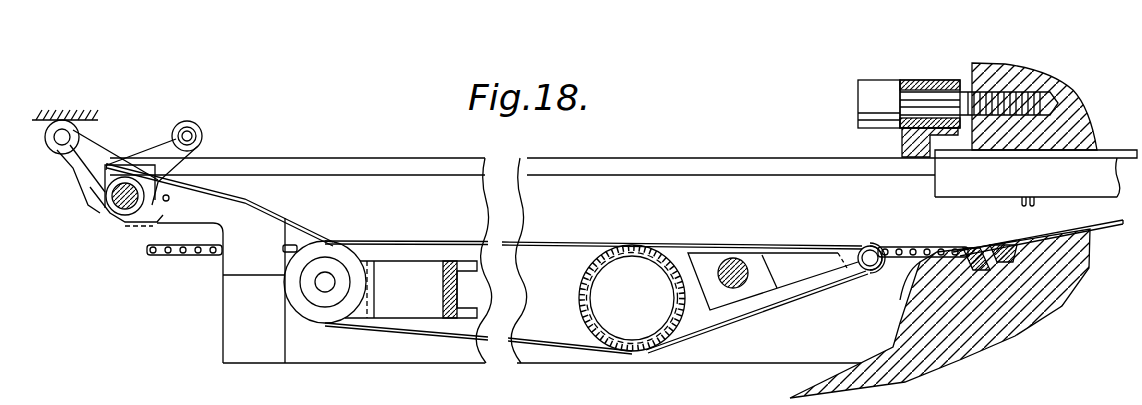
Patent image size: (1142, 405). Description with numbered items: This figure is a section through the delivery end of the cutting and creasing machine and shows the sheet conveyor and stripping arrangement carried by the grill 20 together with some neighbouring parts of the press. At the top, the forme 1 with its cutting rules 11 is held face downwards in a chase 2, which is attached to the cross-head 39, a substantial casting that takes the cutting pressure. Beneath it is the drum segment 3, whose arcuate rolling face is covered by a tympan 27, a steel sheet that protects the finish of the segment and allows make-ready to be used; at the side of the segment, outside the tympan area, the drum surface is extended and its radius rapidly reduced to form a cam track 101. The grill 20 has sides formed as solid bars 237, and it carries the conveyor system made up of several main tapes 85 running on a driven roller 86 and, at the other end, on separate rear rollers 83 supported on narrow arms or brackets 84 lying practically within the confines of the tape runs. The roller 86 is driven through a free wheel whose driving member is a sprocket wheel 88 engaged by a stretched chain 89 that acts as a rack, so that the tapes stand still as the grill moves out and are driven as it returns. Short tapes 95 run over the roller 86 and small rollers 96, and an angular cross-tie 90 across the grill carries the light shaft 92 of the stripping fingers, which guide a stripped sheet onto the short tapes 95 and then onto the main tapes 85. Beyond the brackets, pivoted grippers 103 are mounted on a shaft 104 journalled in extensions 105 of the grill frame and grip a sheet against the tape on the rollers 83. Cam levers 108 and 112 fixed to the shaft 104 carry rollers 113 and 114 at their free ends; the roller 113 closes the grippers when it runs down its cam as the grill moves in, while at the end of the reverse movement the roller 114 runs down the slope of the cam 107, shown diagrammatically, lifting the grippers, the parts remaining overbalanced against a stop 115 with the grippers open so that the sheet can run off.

The forme 1 is at (1105, 184).
The chase 2 is at (908, 138).
The drum segment 3 is at (1024, 314).
The cutting rules 11 is at (1023, 207).
The grill 20 is at (513, 312).
The tympan 27 is at (1113, 231).
The cross-head 39 is at (1078, 115).
The rollers 83 is at (306, 310).
The arms or brackets 84 is at (405, 302).
The tapes 85 is at (578, 348).
The roller 86 is at (651, 344).
The sprocket wheel 88 is at (669, 257).
The chain 89 is at (190, 256).
The angular cross-tie 90 is at (702, 316).
The shaft 92 is at (738, 288).
The short tapes 95 is at (814, 296).
The small rollers 96 is at (871, 252).
The cam track 101 is at (912, 303).
The grippers 103 is at (333, 240).
The shaft 104 is at (118, 215).
The extensions 105 is at (236, 202).
The cam 107 is at (99, 120).
The cam lever 108 is at (203, 137).
The cam lever 112 is at (78, 177).
The roller 113 is at (186, 121).
The roller 114 is at (80, 135).
The stop 115 is at (169, 200).
The solid bars 237 is at (548, 355).